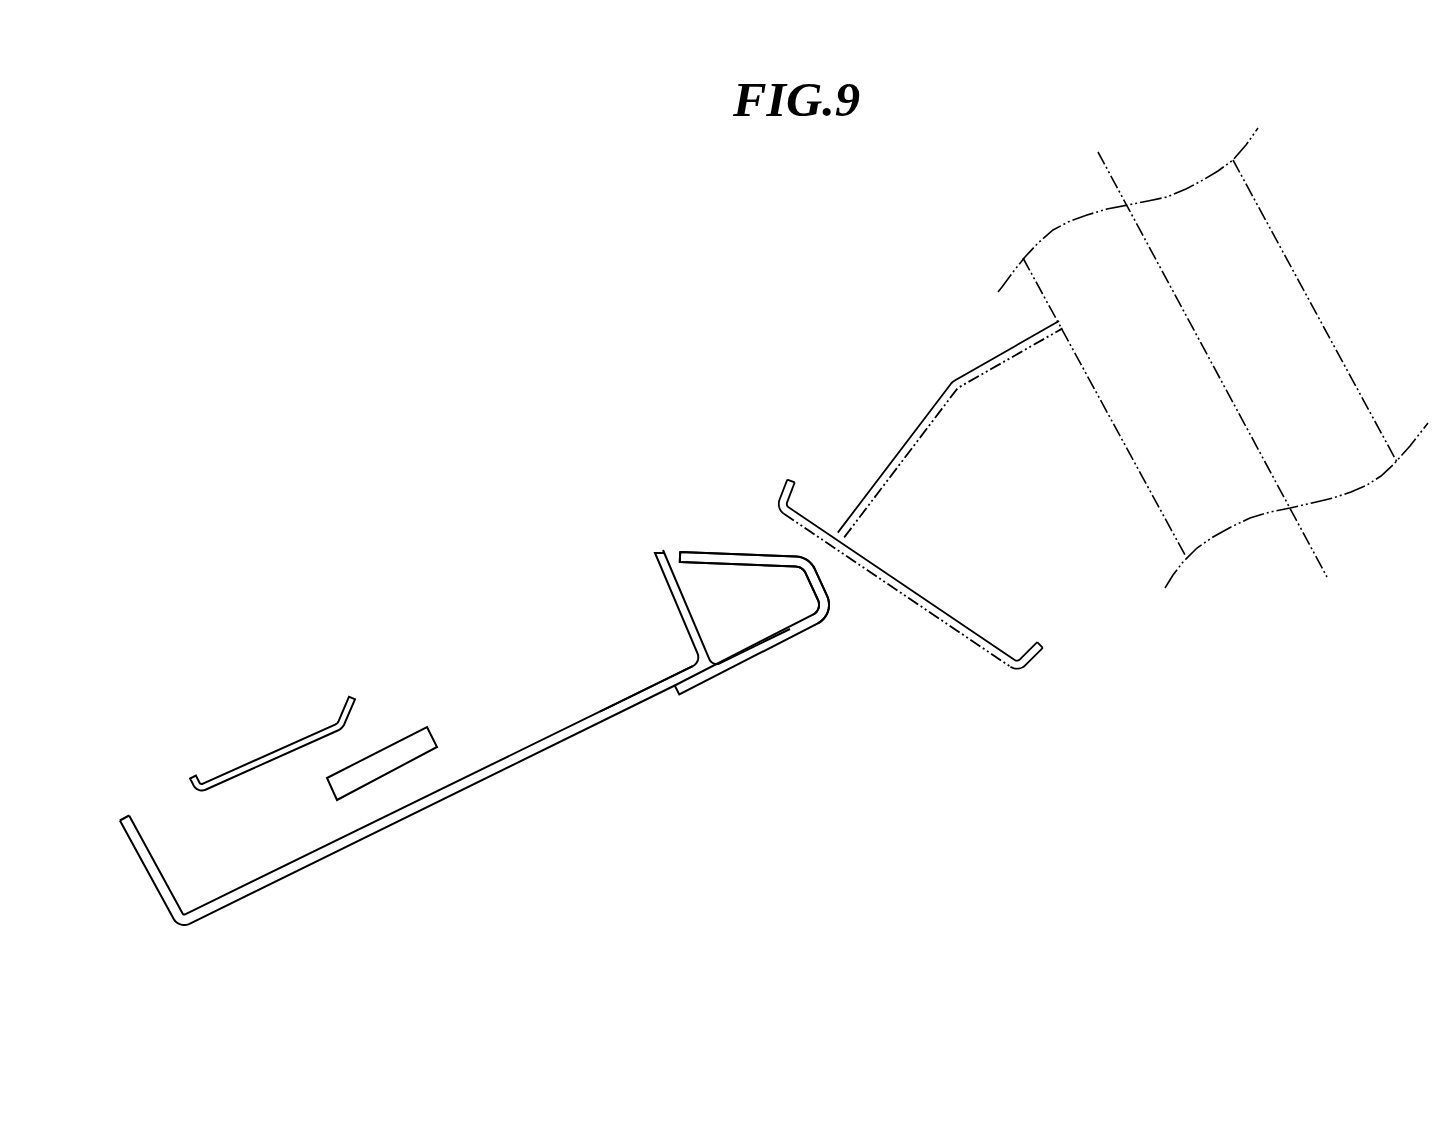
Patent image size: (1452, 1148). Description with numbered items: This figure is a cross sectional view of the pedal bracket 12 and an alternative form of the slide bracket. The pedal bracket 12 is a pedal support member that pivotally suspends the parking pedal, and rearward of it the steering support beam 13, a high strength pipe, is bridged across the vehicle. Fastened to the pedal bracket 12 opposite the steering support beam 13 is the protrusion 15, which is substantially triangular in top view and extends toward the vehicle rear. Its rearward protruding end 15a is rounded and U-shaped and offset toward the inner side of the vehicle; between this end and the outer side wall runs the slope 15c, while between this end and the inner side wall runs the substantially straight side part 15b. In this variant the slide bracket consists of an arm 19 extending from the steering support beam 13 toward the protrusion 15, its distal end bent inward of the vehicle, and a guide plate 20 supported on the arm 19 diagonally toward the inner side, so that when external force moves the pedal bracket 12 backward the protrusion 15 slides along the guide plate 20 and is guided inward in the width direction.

The pedal bracket 12 is at (467, 788).
The steering support beam 13 is at (1313, 340).
The protrusion 15 is at (767, 652).
The rearward protruding end 15a is at (836, 612).
The side part 15b is at (700, 682).
The slope 15c is at (732, 551).
The arm 19 is at (952, 382).
The guide plate 20 is at (960, 613).